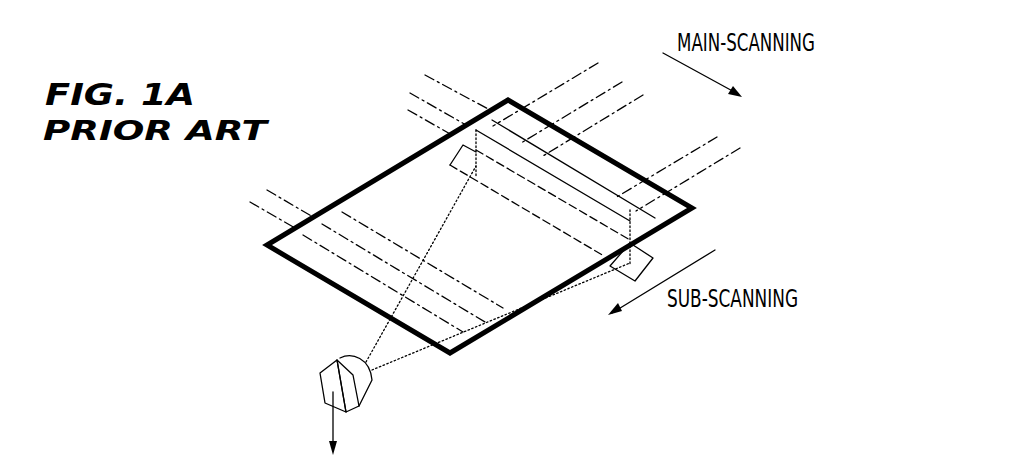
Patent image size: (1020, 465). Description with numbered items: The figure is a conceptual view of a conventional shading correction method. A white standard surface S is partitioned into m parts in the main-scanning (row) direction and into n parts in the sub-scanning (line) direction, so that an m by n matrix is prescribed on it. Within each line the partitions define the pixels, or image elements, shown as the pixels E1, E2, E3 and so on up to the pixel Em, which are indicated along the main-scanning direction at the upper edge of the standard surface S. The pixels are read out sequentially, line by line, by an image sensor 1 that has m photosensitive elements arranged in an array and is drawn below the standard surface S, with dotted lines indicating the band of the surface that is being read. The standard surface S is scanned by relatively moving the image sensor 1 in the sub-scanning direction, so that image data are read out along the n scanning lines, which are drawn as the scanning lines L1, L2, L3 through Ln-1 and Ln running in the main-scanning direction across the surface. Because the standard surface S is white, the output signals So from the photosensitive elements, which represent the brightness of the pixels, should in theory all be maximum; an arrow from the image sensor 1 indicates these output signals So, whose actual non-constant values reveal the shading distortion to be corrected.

The standard surface S is at (332, 275).
The image sensor 1 is at (320, 386).
The output signals So is at (346, 423).
The scanning line L1 is at (457, 79).
The scanning line L2 is at (432, 97).
The scanning line L3 is at (417, 113).
The scanning line Ln-1 is at (278, 189).
The scanning line Ln is at (259, 207).
The pixel E1 is at (558, 81).
The pixel E2 is at (583, 101).
The pixel E3 is at (607, 118).
The pixel Em is at (704, 173).